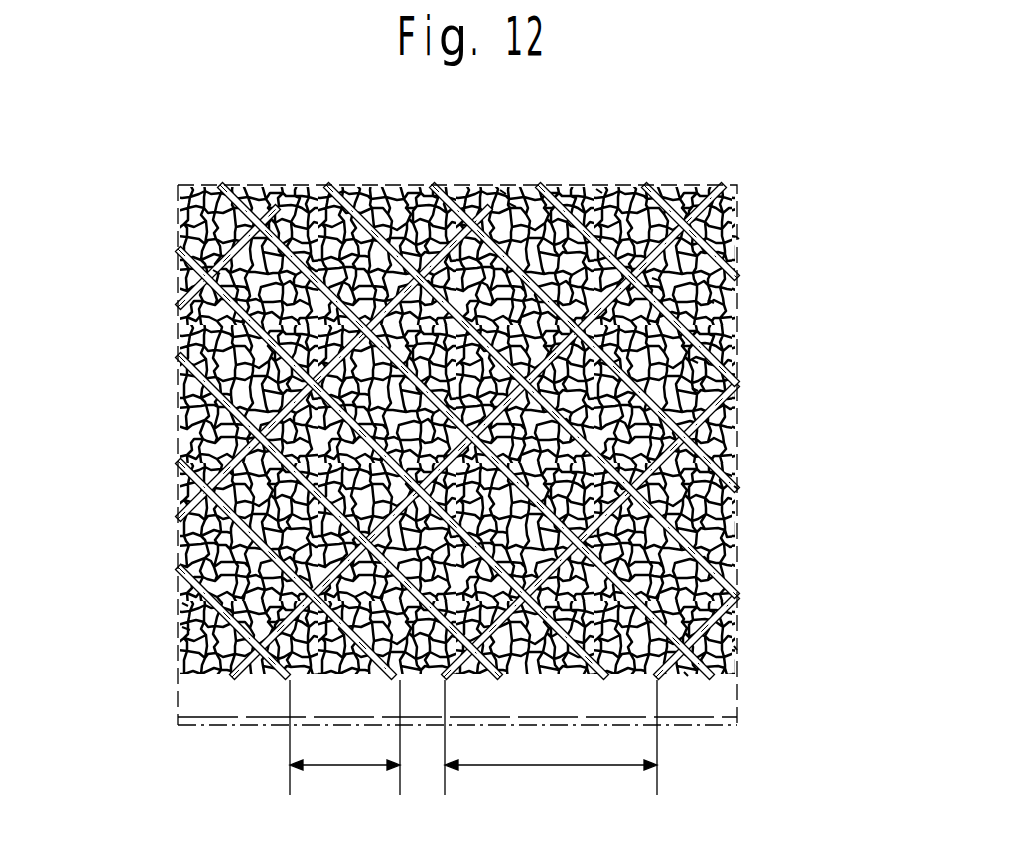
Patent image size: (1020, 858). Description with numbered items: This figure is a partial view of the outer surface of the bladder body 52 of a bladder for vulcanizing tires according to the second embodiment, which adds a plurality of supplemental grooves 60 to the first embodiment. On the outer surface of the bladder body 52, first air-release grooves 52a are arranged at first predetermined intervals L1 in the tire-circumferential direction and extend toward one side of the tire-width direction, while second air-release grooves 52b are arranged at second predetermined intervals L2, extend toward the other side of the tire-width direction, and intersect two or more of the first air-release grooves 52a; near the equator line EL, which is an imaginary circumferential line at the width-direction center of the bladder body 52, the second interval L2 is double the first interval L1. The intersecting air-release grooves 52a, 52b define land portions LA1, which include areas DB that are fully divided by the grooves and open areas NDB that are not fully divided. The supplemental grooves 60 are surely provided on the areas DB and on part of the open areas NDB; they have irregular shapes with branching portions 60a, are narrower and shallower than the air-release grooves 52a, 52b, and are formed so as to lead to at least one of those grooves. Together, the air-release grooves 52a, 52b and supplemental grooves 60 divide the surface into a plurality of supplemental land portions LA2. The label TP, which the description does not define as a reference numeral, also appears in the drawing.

The land portion LA1 is at (333, 186).
The supplemental land portion LA2 is at (702, 576).
The area DB is at (182, 455).
The open area NDB is at (510, 202).
The tip portion TP is at (214, 272).
The supplemental groove 60 is at (738, 237).
The branching portion 60a is at (694, 361).
The bladder body 52 is at (724, 698).
The first air-release groove 52a is at (502, 191).
The second air-release groove 52b is at (736, 487).
The equator line EL is at (178, 698).
The first predetermined interval L1 is at (345, 737).
The second predetermined interval L2 is at (551, 737).